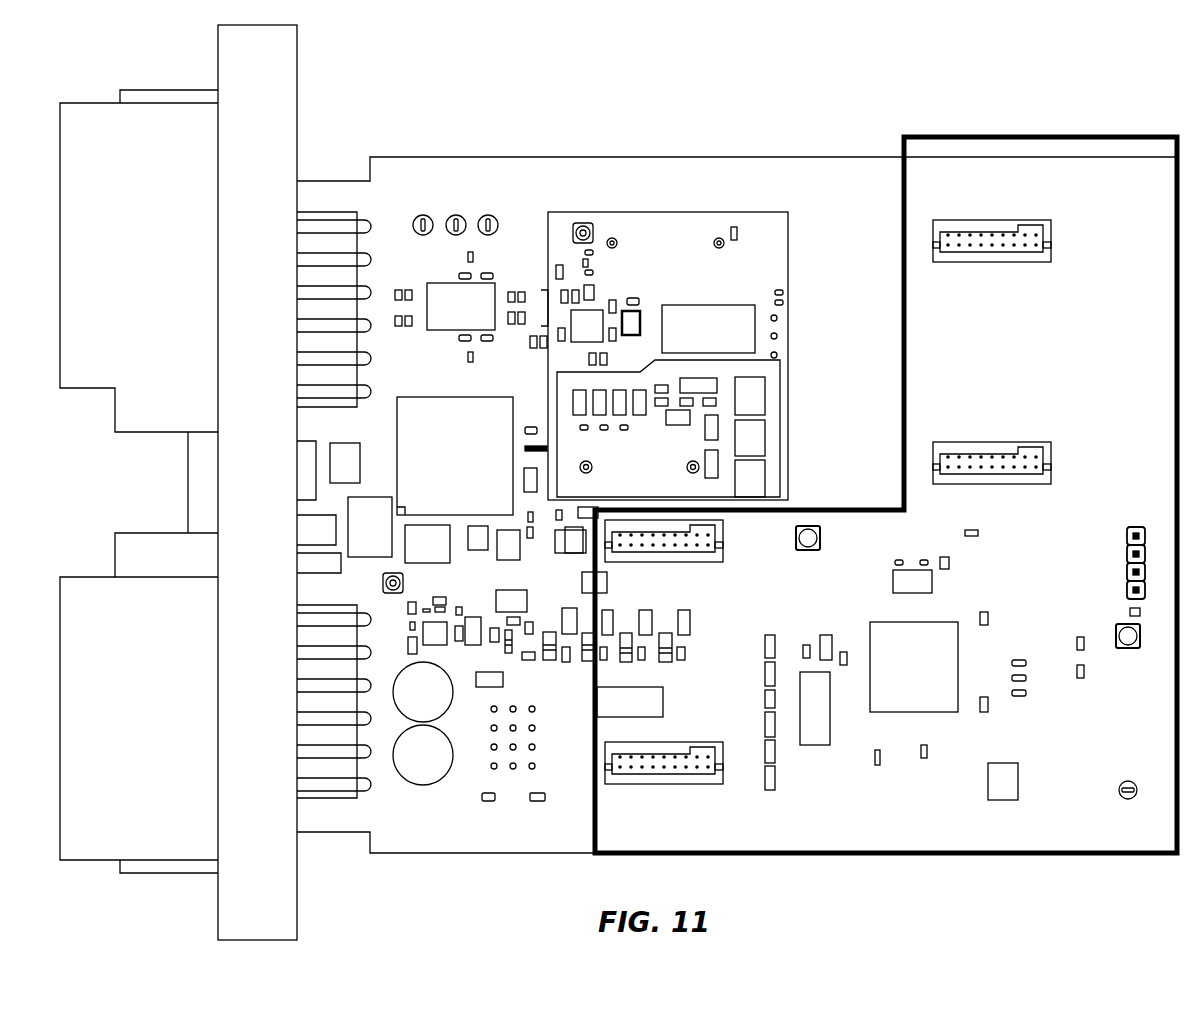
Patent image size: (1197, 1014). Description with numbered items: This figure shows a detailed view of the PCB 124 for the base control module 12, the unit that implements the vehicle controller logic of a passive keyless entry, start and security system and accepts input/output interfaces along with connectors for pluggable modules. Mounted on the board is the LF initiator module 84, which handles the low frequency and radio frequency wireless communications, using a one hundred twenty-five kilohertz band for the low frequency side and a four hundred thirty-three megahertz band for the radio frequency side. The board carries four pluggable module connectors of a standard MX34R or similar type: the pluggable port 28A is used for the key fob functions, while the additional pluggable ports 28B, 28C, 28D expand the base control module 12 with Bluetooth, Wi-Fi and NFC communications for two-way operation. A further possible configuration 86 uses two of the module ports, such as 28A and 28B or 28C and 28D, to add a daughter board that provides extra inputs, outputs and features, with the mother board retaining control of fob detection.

The base control module 12 is at (943, 83).
The PCB 124 is at (420, 158).
The configurations 86 is at (1060, 137).
The LF initiator module 84 is at (636, 212).
The pluggable port 28A is at (685, 785).
The pluggable port 28B is at (685, 563).
The pluggable port 28C is at (1013, 222).
The pluggable port 28D is at (1013, 442).